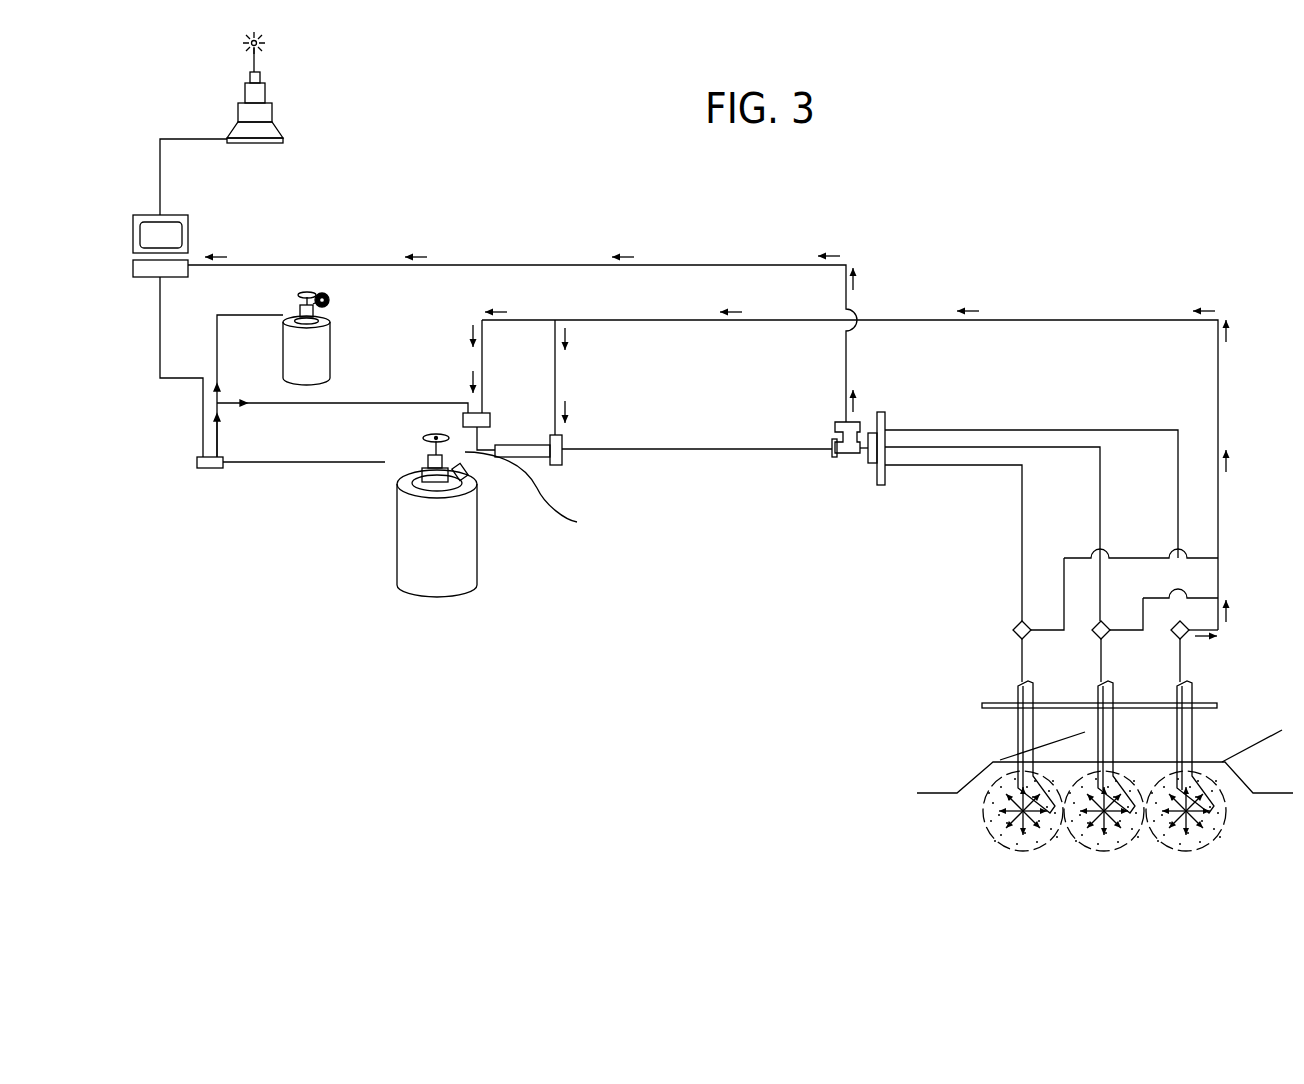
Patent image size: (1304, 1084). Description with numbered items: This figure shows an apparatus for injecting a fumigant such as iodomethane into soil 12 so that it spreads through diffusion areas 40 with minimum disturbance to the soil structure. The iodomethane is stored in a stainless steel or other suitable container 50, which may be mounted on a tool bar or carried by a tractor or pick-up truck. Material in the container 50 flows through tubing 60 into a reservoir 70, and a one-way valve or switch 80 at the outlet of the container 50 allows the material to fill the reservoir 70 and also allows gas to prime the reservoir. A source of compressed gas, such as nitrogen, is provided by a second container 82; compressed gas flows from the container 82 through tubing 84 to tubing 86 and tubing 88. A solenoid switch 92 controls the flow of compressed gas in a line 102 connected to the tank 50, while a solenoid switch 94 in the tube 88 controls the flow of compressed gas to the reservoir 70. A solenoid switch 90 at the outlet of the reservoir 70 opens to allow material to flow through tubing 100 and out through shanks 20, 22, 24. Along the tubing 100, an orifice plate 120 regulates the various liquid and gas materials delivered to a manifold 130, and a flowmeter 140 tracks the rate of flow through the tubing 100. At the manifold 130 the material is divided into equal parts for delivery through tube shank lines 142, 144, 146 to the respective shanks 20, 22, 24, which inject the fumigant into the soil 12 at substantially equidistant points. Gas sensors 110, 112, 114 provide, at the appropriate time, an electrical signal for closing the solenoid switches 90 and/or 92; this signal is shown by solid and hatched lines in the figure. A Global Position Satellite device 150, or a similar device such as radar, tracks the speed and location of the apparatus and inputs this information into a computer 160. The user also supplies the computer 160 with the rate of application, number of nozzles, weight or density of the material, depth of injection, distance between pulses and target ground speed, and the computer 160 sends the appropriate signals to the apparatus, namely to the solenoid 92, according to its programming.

The soil 12 is at (1217, 763).
The shank 20 is at (1018, 690).
The shank 22 is at (1098, 690).
The shank 24 is at (1177, 690).
The diffusion areas 40 is at (1053, 845).
The container 50 is at (478, 540).
The tubing 60 is at (577, 522).
The reservoir 70 is at (525, 445).
The one-way valve or switch 80 is at (468, 478).
The compressed gas container 82 is at (331, 339).
The tubing 84 is at (218, 345).
The tubing 86 is at (218, 432).
The tubing 88 is at (410, 403).
The solenoid switch 90 is at (562, 440).
The solenoid switch 92 is at (212, 468).
The solenoid switch 94 is at (463, 418).
The tubing 100 is at (715, 449).
The line 102 is at (313, 462).
The gas sensor 110 is at (1020, 623).
The gas sensor 112 is at (1100, 622).
The gas sensor 114 is at (1178, 623).
The orifice plate 120 is at (834, 455).
The manifold 130 is at (865, 473).
The flowmeter 140 is at (862, 428).
The tube shank line 142 is at (1022, 506).
The tube shank line 144 is at (1101, 506).
The tube shank line 146 is at (1178, 542).
The GPS device 150 is at (280, 124).
The computer 160 is at (188, 237).